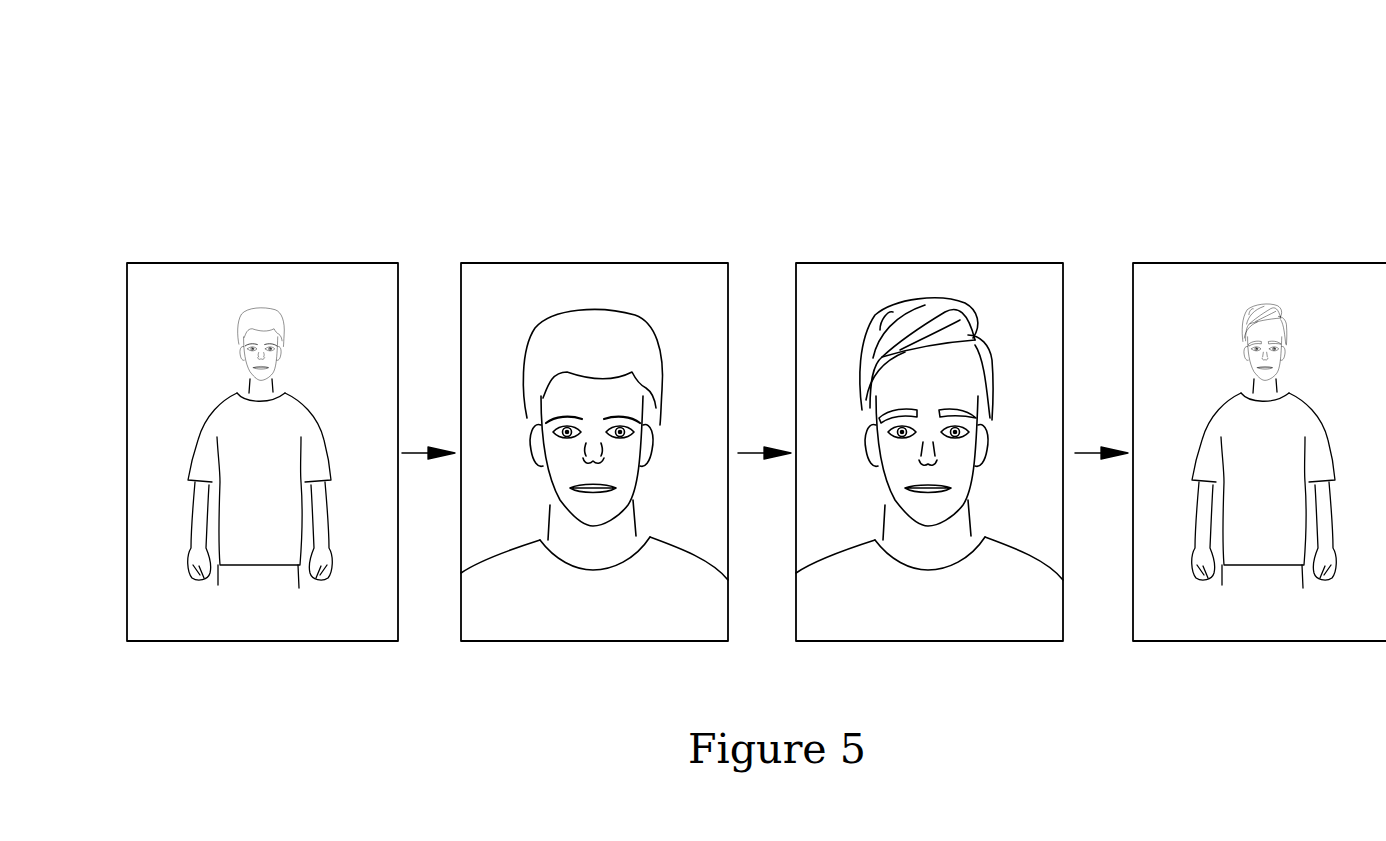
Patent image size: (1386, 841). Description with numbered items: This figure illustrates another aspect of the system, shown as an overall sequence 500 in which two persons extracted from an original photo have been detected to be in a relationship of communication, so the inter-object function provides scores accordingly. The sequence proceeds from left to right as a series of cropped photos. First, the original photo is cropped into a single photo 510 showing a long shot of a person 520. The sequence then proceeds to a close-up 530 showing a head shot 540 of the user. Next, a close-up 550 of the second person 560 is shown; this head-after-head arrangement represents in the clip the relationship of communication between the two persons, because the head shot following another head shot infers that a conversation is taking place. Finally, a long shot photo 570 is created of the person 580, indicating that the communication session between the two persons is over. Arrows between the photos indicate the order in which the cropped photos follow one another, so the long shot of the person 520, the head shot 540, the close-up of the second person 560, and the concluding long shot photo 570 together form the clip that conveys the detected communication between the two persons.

The image translation process 500 is at (222, 104).
The single photo 510 is at (203, 262).
The person 520 is at (240, 313).
The close-up 530 is at (543, 262).
The head shot 540 is at (548, 322).
The close-up of the second person 550 is at (878, 262).
The second person 560 is at (882, 327).
The long shot photo 570 is at (1215, 262).
The person 580 is at (1246, 320).